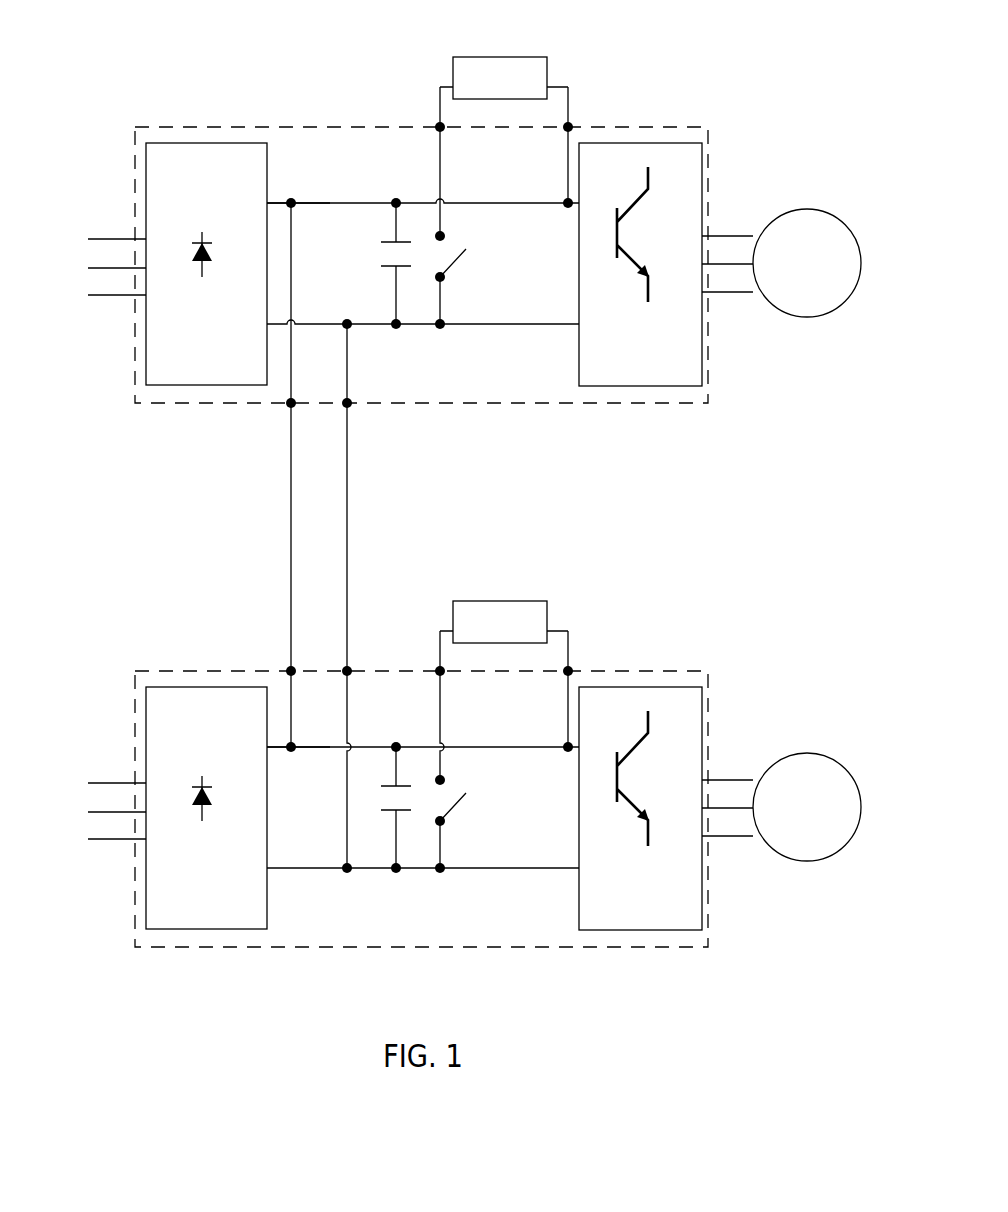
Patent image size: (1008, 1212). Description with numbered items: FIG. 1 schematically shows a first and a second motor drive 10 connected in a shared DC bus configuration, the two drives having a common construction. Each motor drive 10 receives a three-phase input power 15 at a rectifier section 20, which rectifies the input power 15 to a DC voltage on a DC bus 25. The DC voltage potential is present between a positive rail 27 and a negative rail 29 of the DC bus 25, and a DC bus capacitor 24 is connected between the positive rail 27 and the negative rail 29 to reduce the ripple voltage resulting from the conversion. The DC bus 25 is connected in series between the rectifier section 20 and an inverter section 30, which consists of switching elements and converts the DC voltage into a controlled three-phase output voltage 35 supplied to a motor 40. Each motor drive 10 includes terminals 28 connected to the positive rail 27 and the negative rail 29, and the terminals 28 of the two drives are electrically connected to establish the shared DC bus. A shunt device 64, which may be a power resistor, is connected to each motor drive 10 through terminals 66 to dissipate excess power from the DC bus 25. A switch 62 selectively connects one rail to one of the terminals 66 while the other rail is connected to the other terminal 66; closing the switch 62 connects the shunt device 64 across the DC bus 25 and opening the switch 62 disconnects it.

The motor drive 10 is at (620, 127).
The three-phase input power 15 is at (118, 236).
The rectifier section 20 is at (215, 366).
The DC bus capacitor 24 is at (400, 270).
The DC bus 25 is at (338, 198).
The positive rail 27 is at (309, 205).
The terminals 28 is at (294, 411).
The negative rail 29 is at (365, 322).
The inverter section 30 is at (656, 364).
The output voltage 35 is at (728, 232).
The motor 40 is at (787, 210).
The switch 62 is at (454, 266).
The shunt device 64 is at (478, 57).
The terminals 66 is at (443, 130).